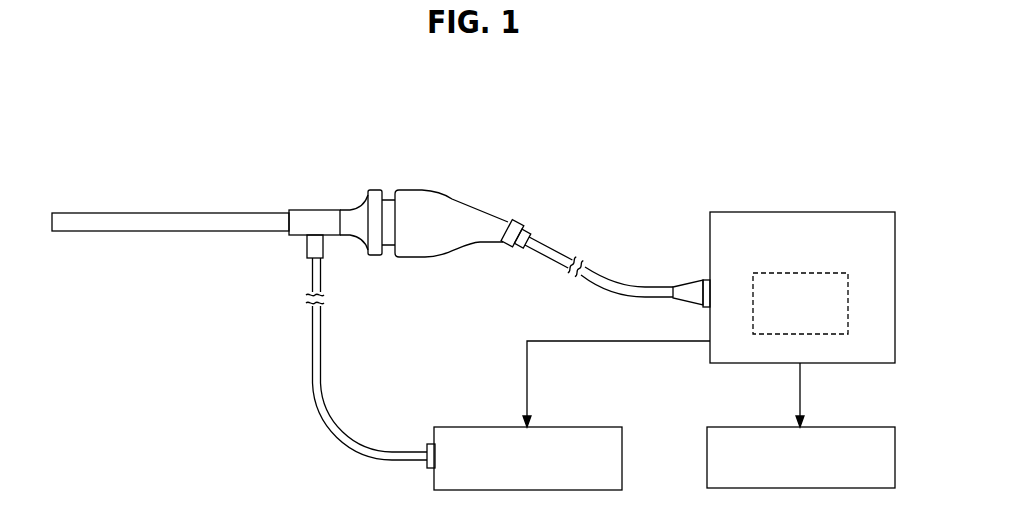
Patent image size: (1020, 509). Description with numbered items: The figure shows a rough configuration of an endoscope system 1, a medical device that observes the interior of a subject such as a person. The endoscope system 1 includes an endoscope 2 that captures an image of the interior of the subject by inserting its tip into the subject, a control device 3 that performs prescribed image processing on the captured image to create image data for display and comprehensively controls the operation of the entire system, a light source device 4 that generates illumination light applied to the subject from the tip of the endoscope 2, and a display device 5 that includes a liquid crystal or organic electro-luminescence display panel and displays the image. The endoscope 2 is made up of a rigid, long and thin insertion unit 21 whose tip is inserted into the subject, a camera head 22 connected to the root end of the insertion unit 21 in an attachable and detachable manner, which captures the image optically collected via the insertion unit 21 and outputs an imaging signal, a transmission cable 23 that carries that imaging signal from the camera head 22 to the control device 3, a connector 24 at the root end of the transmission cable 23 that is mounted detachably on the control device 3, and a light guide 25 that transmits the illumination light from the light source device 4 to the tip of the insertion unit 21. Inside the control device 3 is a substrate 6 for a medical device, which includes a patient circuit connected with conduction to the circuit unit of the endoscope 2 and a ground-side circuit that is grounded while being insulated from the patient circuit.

The endoscope system 1 is at (590, 132).
The endoscope 2 is at (476, 196).
The insertion unit 21 is at (210, 222).
The camera head 22 is at (425, 202).
The transmission cable 23 is at (606, 278).
The connector 24 is at (682, 287).
The light guide 25 is at (317, 345).
The control device 3 is at (860, 212).
The light source device 4 is at (585, 427).
The display device 5 is at (857, 427).
The substrate for a medical device 6 is at (852, 302).